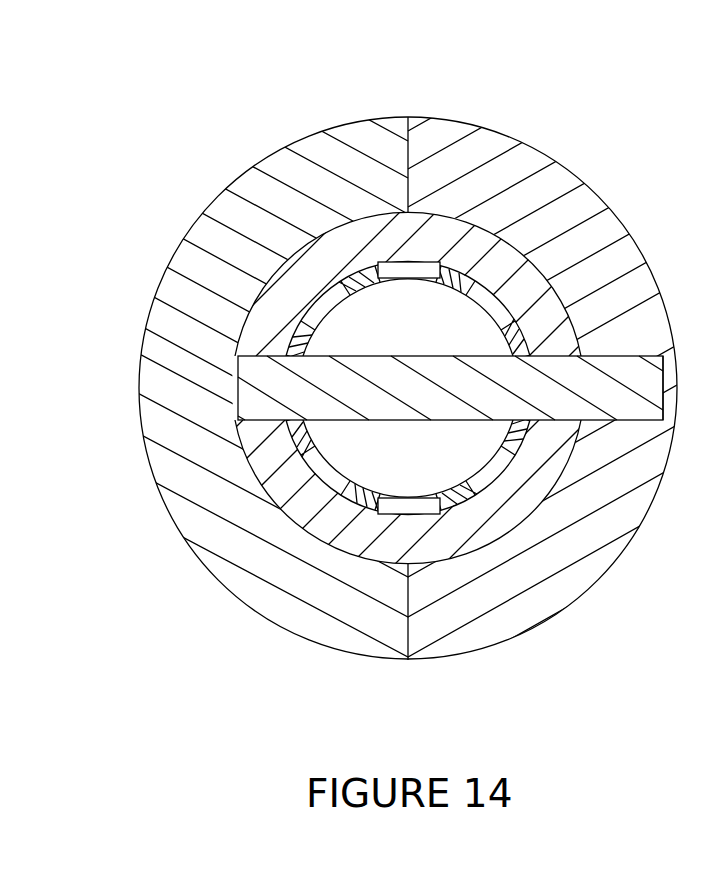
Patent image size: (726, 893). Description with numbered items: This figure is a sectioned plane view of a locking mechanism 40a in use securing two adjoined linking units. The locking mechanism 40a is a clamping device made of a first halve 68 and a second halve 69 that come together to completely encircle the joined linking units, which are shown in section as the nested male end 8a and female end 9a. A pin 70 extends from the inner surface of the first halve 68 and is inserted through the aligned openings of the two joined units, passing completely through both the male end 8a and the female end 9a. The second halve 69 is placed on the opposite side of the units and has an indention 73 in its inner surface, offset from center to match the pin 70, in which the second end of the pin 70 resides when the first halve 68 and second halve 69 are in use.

The male end 8a is at (295, 283).
The female end 9a is at (255, 460).
The locking mechanism 40a is at (395, 117).
The first halve 68 is at (192, 512).
The second halve 69 is at (547, 152).
The pin 70 is at (612, 388).
The indention 73 is at (632, 421).